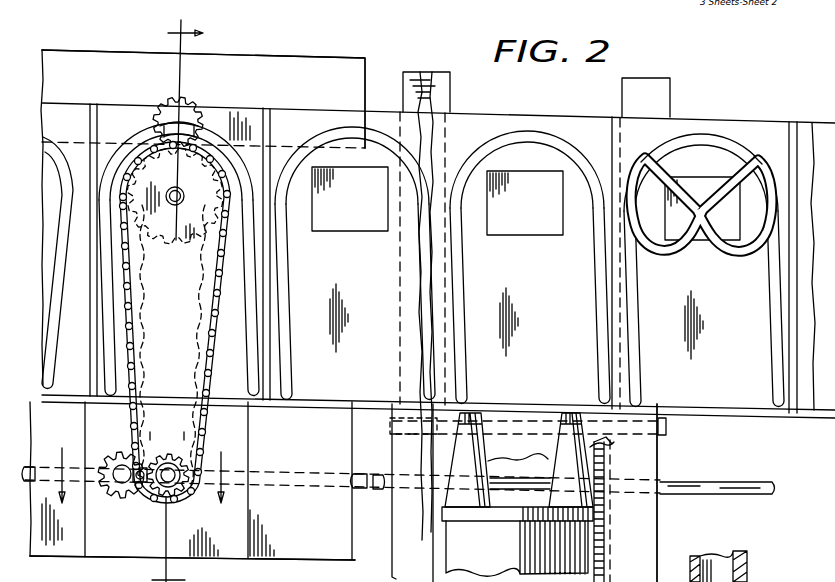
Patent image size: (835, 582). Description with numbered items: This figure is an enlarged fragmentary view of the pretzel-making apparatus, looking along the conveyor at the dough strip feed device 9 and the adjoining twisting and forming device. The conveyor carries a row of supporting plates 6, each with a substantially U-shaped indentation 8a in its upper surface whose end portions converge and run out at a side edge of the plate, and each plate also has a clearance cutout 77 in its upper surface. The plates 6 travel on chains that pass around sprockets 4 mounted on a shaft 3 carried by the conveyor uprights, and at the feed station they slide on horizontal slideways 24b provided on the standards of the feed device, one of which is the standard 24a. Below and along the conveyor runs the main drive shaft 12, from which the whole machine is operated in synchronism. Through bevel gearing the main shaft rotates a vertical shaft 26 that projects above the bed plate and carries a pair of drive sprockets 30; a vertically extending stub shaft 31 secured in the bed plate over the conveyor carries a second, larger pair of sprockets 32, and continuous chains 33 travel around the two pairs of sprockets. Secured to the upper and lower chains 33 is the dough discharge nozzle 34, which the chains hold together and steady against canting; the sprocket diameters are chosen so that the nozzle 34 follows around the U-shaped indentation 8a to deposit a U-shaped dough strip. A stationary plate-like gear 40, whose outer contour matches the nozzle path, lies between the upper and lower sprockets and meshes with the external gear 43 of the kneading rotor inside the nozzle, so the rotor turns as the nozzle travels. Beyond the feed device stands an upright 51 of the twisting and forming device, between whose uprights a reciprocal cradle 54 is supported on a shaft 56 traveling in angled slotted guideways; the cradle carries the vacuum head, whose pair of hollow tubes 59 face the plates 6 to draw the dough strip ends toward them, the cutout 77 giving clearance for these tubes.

The shaft 3 is at (185, 123).
The sprockets 4 is at (141, 469).
The supporting plates 6 is at (100, 104).
The U-shaped indentation 8a is at (58, 300).
The dough strip feed device 9 is at (226, 563).
The main drive shaft 12 is at (295, 487).
The standard 24a is at (312, 68).
The horizontal slideways 24b is at (364, 125).
The shaft 26 is at (163, 498).
The drive sprockets 30 is at (180, 450).
The stub shaft 31 is at (182, 204).
The sprockets 32 is at (176, 246).
The continuous chains 33 is at (213, 307).
The dough discharge nozzle 34 is at (195, 110).
The stationary gear 40 is at (198, 346).
The external gear 43 is at (110, 492).
The upright 51 is at (648, 541).
The cradle 54 is at (495, 445).
The shaft 56 is at (531, 444).
The hollow tubes 59 is at (460, 458).
The clearance cutout 77 is at (355, 233).